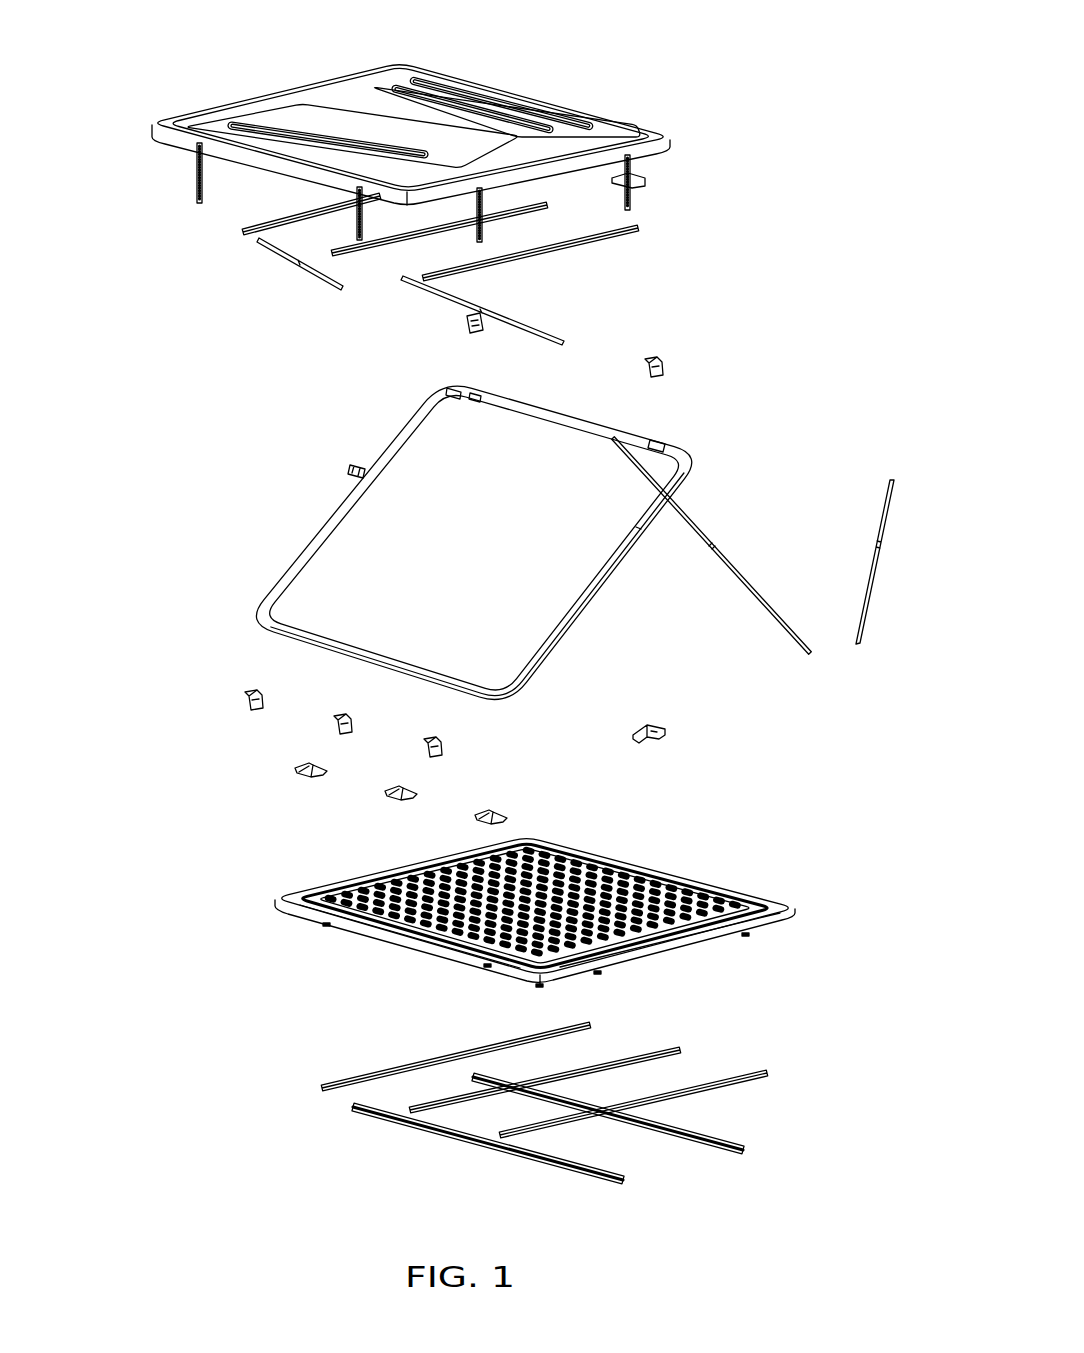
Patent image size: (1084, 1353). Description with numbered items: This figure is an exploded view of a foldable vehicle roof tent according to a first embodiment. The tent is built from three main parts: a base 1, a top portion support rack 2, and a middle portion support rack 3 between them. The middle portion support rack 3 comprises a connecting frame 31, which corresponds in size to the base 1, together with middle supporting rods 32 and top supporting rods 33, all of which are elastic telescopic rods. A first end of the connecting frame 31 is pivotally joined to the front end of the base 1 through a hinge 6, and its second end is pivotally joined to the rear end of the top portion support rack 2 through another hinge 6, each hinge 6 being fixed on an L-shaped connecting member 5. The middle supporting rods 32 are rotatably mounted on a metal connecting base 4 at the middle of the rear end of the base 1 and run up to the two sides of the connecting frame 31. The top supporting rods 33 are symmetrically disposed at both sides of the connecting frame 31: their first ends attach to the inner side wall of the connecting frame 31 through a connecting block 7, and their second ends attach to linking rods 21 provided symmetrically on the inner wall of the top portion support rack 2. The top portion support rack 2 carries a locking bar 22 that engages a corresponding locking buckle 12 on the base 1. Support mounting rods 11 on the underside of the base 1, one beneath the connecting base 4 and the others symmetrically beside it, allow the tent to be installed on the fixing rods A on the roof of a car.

The base 1 is at (461, 914).
The support mounting rods 11 is at (427, 1060).
The locking buckle 12 is at (327, 924).
The top portion support rack 2 is at (597, 117).
The linking rods 21 is at (617, 237).
The locking bar 22 is at (192, 178).
The middle portion support rack 3 is at (560, 468).
The connecting frame 31 is at (337, 488).
The middle supporting rods 32 is at (757, 590).
The top supporting rods 33 is at (308, 270).
The connecting base 4 is at (665, 738).
The L-shaped connecting member 5 is at (645, 180).
The hinge 6 is at (666, 367).
The connecting block 7 is at (360, 477).
The fixing rods A is at (425, 1130).